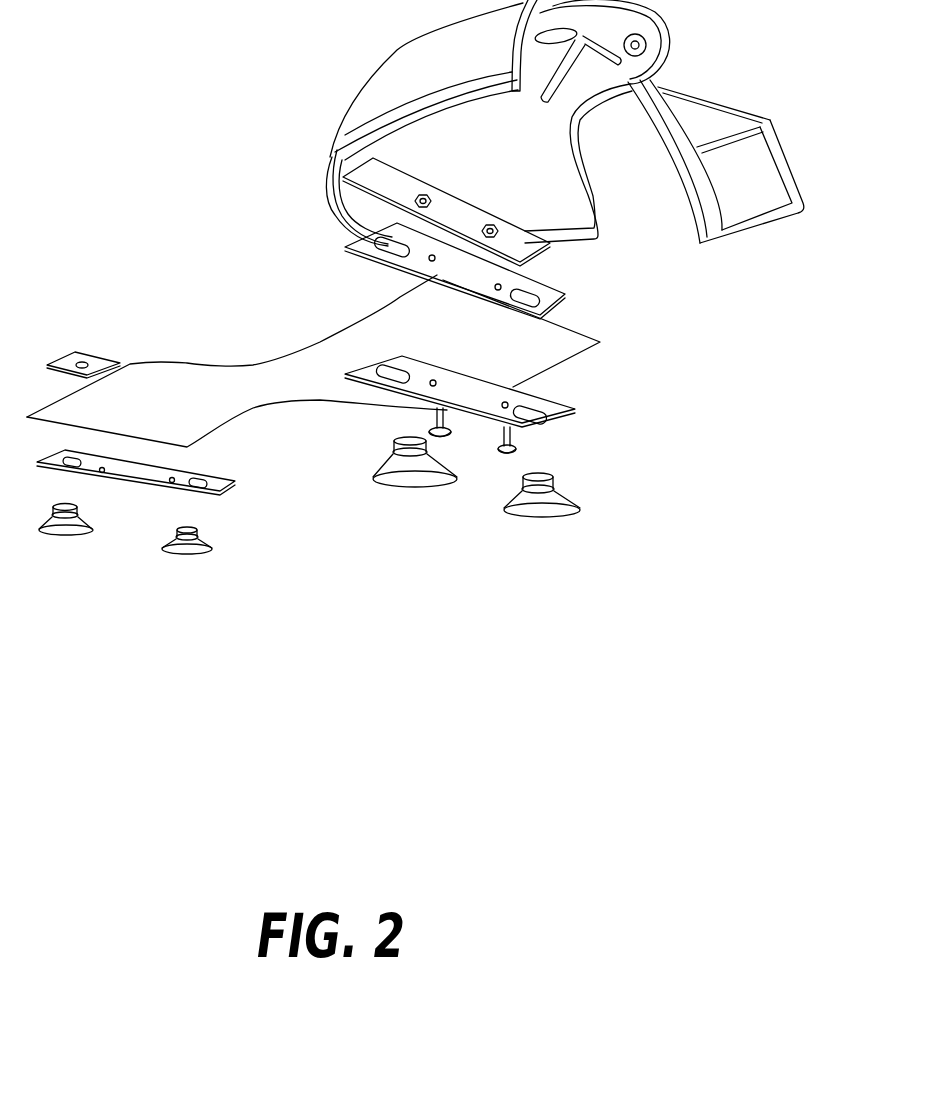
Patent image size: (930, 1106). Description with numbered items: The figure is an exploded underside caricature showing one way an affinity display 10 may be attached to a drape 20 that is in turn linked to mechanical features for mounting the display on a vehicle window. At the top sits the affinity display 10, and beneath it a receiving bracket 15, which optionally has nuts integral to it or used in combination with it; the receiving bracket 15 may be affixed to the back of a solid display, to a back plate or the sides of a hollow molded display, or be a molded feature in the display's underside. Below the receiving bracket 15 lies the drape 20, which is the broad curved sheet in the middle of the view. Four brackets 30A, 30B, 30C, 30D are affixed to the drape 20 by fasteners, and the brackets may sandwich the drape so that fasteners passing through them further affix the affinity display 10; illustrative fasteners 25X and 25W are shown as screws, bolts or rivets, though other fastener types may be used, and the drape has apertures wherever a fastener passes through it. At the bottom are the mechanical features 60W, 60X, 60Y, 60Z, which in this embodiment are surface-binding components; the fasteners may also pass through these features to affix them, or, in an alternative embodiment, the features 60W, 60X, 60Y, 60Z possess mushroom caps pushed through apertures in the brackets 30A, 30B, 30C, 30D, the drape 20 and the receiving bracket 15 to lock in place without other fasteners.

The affinity display 10 is at (427, 45).
The receiving bracket 15 is at (545, 247).
The drape 20 is at (261, 344).
The bracket 30A is at (560, 298).
The bracket 30B is at (573, 410).
The bracket 30C is at (57, 356).
The bracket 30D is at (237, 483).
The fastener 25W is at (520, 442).
The fastener 25X is at (457, 421).
The mechanical feature 60W is at (583, 488).
The mechanical feature 60X is at (400, 504).
The mechanical feature 60Y is at (192, 571).
The mechanical feature 60Z is at (71, 554).